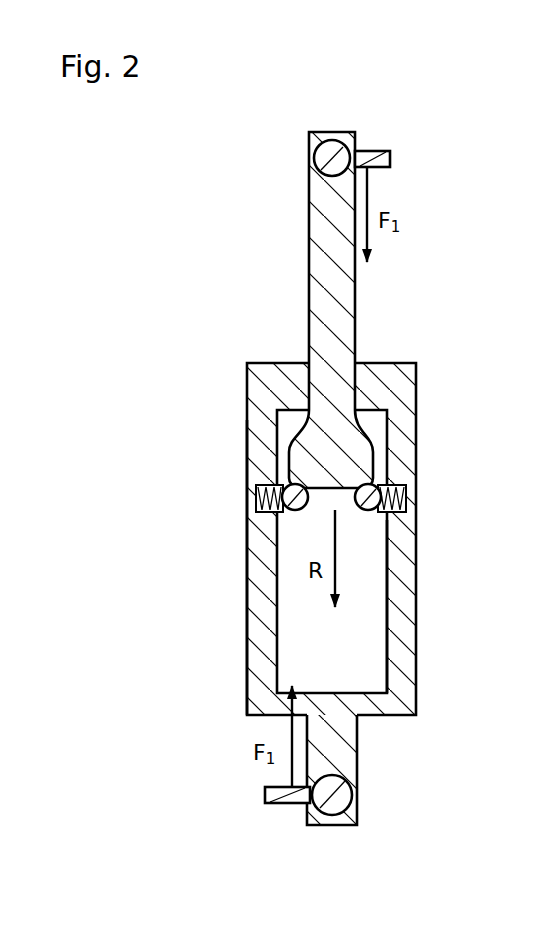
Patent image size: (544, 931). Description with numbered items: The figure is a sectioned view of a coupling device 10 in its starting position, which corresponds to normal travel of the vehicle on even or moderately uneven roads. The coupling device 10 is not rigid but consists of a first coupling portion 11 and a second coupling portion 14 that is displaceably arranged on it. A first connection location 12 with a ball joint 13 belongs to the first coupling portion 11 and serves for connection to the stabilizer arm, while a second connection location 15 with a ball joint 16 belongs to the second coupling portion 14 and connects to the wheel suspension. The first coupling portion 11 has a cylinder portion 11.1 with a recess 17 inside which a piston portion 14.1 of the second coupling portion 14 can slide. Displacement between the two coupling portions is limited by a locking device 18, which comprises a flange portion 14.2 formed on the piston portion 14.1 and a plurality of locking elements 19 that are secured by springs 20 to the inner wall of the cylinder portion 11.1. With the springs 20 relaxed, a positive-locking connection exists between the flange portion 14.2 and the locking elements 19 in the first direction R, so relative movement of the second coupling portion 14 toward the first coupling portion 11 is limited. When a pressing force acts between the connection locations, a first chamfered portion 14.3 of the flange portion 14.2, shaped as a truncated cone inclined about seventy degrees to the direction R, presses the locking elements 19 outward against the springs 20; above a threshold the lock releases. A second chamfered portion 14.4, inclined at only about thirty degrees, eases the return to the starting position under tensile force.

The coupling device 10 is at (480, 178).
The first coupling portion 11 is at (165, 626).
The cylinder portion 11.1 is at (245, 560).
The first connection location 12 is at (280, 818).
The ball joint 13 is at (357, 797).
The second coupling portion 14 is at (270, 290).
The piston portion 14.1 is at (287, 418).
The flange portion 14.2 is at (283, 453).
The first chamfered portion 14.3 is at (378, 490).
The second chamfered portion 14.4 is at (370, 428).
The second connection location 15 is at (375, 135).
The ball joint 16 is at (318, 157).
The recess 17 is at (372, 572).
The locking device 18 is at (352, 525).
The locking elements 19 is at (294, 511).
The springs 20 is at (258, 497).